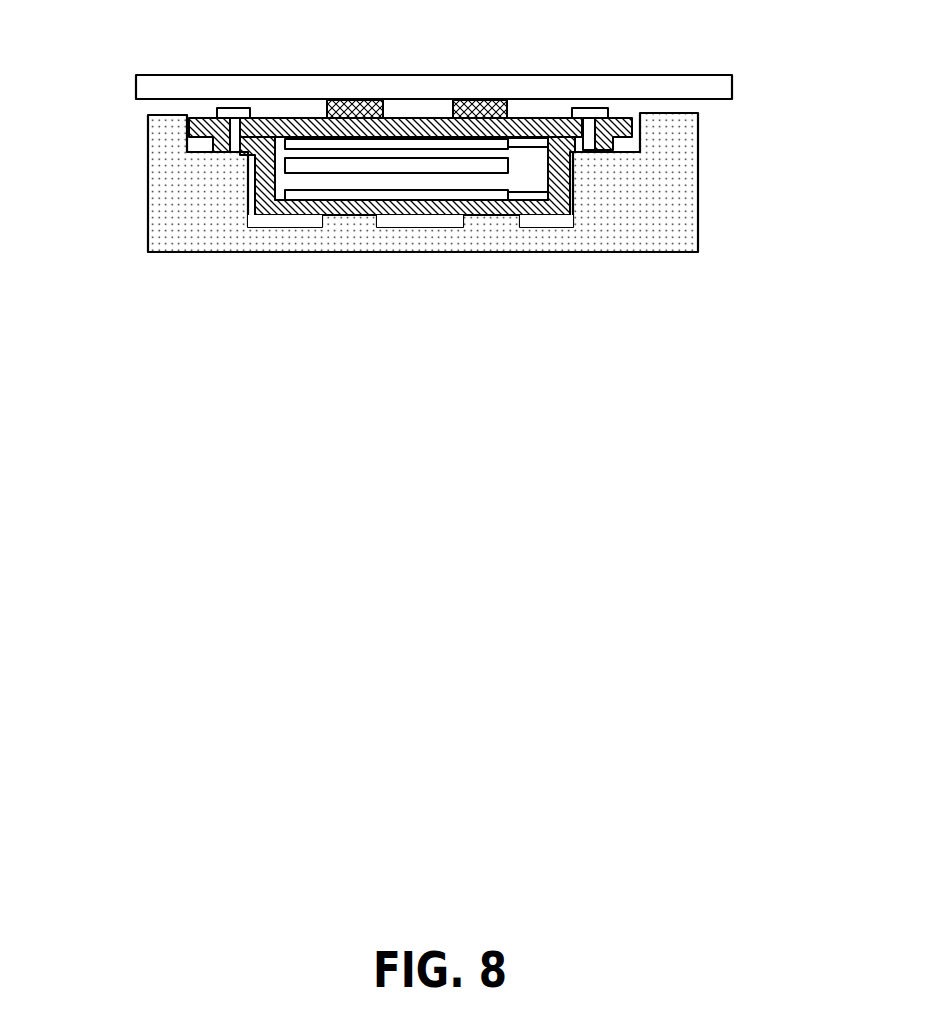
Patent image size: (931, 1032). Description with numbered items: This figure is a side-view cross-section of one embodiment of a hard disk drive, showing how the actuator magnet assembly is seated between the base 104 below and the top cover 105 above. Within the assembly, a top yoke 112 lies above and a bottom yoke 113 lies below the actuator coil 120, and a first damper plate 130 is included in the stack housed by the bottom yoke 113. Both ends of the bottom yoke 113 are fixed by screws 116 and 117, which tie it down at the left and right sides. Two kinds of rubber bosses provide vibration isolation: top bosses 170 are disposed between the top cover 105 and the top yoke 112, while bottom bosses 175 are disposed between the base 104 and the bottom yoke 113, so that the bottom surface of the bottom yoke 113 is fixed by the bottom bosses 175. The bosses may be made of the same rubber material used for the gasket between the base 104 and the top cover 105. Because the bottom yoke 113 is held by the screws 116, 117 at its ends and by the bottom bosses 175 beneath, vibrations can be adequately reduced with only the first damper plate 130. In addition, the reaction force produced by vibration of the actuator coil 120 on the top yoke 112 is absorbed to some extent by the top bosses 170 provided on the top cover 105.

The base 104 is at (215, 237).
The top cover 105 is at (286, 90).
The top yoke 112 is at (547, 123).
The bottom yoke 113 is at (555, 203).
The screw 116 is at (233, 113).
The screw 117 is at (597, 112).
The actuator coil 120 is at (313, 167).
The first damper plate 130 is at (520, 138).
The top bosses 170 is at (473, 100).
The bottom bosses 175 is at (492, 220).